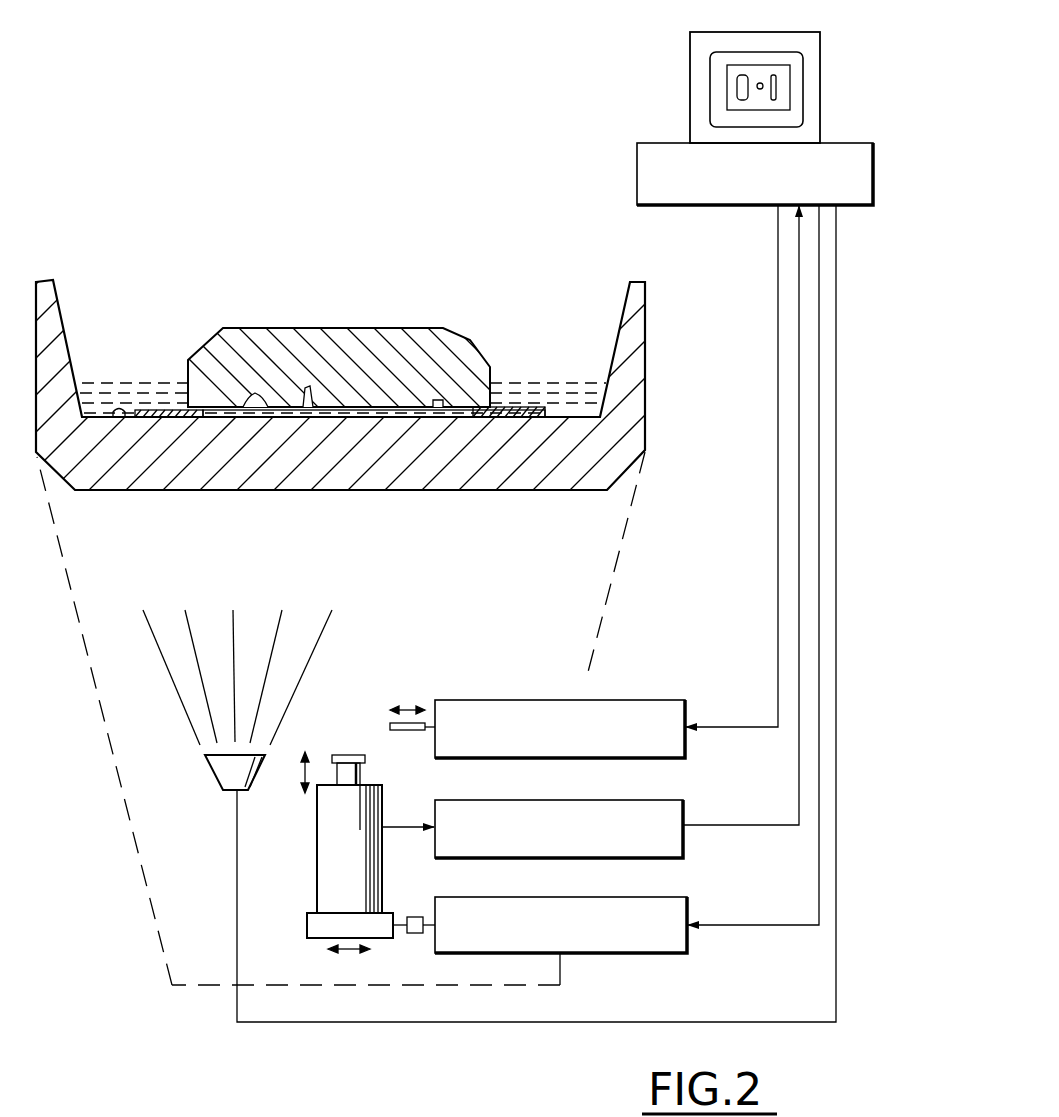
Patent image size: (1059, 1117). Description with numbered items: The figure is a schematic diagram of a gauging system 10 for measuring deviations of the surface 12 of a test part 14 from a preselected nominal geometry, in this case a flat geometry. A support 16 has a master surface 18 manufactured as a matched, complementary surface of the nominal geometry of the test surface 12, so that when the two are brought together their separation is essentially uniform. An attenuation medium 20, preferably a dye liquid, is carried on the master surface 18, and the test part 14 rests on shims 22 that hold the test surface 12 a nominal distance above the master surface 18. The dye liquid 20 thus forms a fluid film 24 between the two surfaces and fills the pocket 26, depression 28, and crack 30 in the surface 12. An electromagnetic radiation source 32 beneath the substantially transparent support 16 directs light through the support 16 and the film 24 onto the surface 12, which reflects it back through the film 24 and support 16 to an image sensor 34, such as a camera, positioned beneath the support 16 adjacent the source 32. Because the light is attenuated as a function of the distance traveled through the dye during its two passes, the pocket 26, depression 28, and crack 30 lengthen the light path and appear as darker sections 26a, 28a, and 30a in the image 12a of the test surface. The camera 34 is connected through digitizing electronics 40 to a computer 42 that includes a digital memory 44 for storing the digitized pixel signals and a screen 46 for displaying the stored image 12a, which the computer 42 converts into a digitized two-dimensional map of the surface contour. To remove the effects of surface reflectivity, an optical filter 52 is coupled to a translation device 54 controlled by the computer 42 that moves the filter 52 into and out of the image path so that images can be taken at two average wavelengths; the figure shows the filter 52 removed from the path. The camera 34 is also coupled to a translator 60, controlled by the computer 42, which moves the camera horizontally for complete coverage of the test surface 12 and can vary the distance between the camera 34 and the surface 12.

The gauging system 10 is at (108, 205).
The test surface 12 is at (490, 367).
The test part 14 is at (345, 330).
The support 16 is at (187, 487).
The master surface 18 is at (117, 418).
The attenuation medium 20 is at (118, 380).
The shims 22 is at (197, 418).
The fluid film 24 is at (413, 414).
The pocket 26 is at (273, 400).
The depression 28 is at (363, 400).
The crack 30 is at (443, 400).
The electromagnetic radiation source 32 is at (215, 783).
The image sensor 34 is at (318, 850).
The digitizing electronics 40 is at (683, 802).
The computer 42 is at (650, 78).
The digital memory 44 is at (637, 147).
The screen 46 is at (710, 60).
The optical filter 52 is at (390, 727).
The translation device 54 is at (495, 700).
The translator 60 is at (687, 898).
The image of the test part surface 12a is at (787, 68).
The darker image section 26a is at (743, 73).
The darker image section 28a is at (762, 83).
The darker image section 30a is at (777, 97).